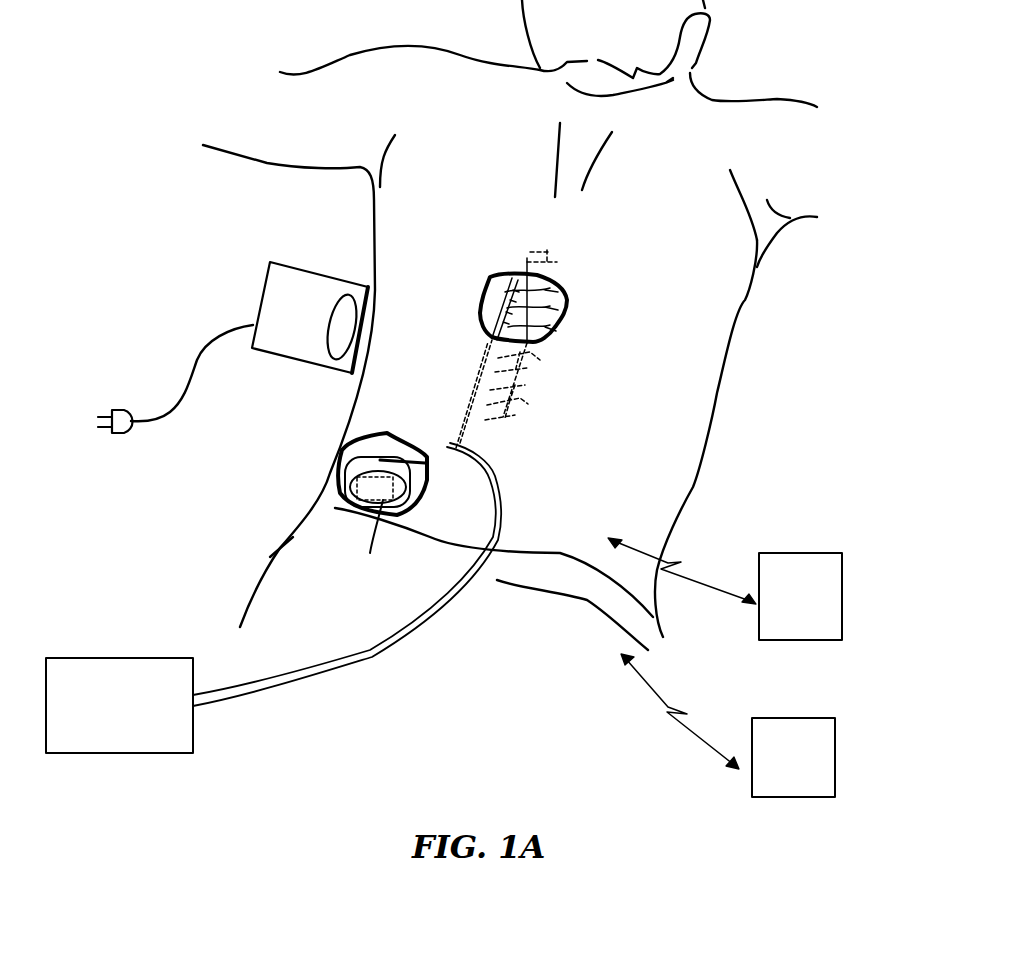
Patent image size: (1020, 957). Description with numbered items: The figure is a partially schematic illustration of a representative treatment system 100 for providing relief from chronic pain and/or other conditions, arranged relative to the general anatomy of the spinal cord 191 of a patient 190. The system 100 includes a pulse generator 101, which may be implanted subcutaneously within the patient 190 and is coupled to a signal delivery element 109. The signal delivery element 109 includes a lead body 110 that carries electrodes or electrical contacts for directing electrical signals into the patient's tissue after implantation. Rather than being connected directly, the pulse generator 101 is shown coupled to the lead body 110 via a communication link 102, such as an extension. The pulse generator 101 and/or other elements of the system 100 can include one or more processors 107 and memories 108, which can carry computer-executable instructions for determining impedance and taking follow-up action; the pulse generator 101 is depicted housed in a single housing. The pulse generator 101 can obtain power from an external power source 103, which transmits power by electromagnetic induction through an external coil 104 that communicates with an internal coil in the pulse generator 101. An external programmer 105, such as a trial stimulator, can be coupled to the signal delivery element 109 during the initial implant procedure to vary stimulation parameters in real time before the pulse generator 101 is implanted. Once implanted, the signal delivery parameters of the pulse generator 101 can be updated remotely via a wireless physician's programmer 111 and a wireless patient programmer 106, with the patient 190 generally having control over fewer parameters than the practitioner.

The treatment system 100 is at (259, 431).
The pulse generator 101 is at (417, 487).
The communication link 102 is at (466, 441).
The external power source 103 is at (307, 262).
The external coil 104 is at (327, 343).
The external programmer 105 is at (80, 658).
The wireless patient programmer 106 is at (812, 553).
The processor 107 is at (340, 500).
The memory 108 is at (364, 547).
The signal delivery element 109 is at (487, 273).
The lead body 110 is at (503, 310).
The wireless physician's programmer 111 is at (805, 718).
The patient 190 is at (695, 420).
The spinal cord 191 is at (518, 391).